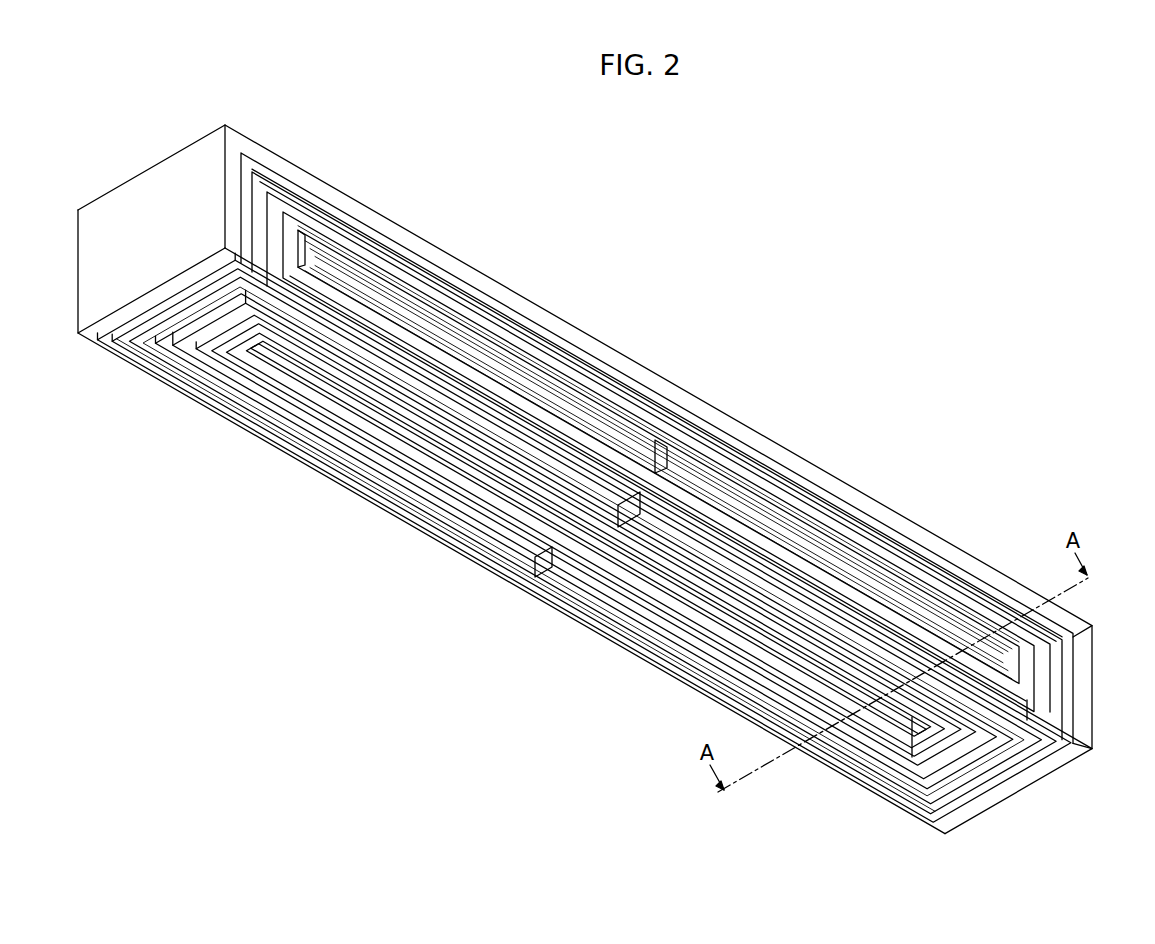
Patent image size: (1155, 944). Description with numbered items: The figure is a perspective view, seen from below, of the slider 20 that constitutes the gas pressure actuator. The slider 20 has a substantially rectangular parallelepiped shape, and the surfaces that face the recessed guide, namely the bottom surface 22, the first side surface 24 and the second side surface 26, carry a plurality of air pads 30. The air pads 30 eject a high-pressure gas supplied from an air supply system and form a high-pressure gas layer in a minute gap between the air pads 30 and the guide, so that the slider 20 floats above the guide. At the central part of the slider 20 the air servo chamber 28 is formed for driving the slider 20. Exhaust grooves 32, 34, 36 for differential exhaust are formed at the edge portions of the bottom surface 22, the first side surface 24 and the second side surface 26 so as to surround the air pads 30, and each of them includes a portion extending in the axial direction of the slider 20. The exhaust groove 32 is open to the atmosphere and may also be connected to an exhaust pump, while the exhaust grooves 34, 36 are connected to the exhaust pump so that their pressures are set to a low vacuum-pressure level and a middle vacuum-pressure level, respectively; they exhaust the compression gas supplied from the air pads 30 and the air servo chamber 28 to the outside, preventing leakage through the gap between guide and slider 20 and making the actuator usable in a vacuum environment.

The slider 20 is at (832, 408).
The bottom surface 22 is at (968, 747).
The first side surface 24 is at (290, 227).
The second side surface 26 is at (370, 490).
The air servo chamber 28 is at (500, 493).
The air pads 30 is at (667, 445).
The exhaust groove 32 is at (475, 320).
The exhaust groove 34 is at (430, 280).
The exhaust groove 36 is at (345, 220).